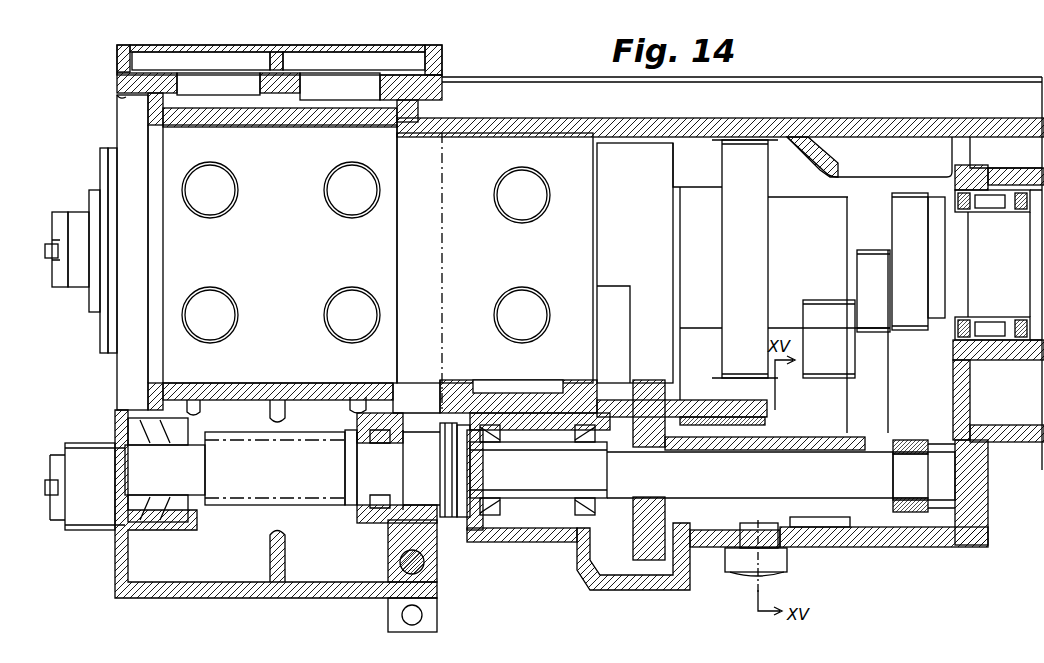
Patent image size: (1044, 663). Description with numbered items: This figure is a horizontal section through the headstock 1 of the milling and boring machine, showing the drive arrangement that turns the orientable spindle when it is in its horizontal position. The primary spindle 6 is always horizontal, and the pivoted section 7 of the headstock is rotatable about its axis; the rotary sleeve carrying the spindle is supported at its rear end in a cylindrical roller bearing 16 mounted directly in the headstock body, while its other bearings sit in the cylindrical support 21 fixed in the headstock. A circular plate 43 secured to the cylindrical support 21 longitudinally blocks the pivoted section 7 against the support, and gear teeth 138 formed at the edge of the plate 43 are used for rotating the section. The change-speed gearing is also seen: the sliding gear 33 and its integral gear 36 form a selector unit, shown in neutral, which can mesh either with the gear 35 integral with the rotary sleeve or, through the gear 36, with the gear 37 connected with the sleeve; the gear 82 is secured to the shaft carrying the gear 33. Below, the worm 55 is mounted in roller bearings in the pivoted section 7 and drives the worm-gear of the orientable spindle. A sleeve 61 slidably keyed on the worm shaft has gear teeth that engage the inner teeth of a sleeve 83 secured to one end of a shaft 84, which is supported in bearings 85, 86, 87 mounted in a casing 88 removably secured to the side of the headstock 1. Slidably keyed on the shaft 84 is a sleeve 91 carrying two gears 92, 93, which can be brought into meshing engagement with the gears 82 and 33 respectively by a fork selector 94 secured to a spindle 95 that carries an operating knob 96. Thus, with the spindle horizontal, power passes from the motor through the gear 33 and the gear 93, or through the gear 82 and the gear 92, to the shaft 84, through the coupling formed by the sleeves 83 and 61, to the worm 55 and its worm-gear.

The headstock 1 is at (877, 136).
The gear teeth 138 is at (118, 93).
The circular plate 43 is at (128, 136).
The primary spindle 6 is at (63, 223).
The cylindrical support 21 is at (183, 366).
The gear 82 is at (620, 272).
The gear 37 is at (745, 139).
The gear 36 is at (815, 299).
The gear 33 is at (866, 250).
The gear 35 is at (906, 192).
The cylindrical roller bearing 16 is at (990, 186).
The pivoted section 7 is at (115, 583).
The worm 55 is at (240, 506).
The sleeve 61 is at (436, 522).
The sleeve 83 is at (462, 518).
The shaft 84 is at (541, 486).
The bearing 85 is at (501, 447).
The bearing 86 is at (586, 516).
The casing 88 is at (632, 577).
The gear 92 is at (662, 562).
The sleeve 91 is at (727, 545).
The spindle 95 is at (777, 561).
The operating knob 96 is at (743, 573).
The fork selector 94 is at (792, 540).
The gear 93 is at (842, 520).
The bearing 87 is at (900, 520).